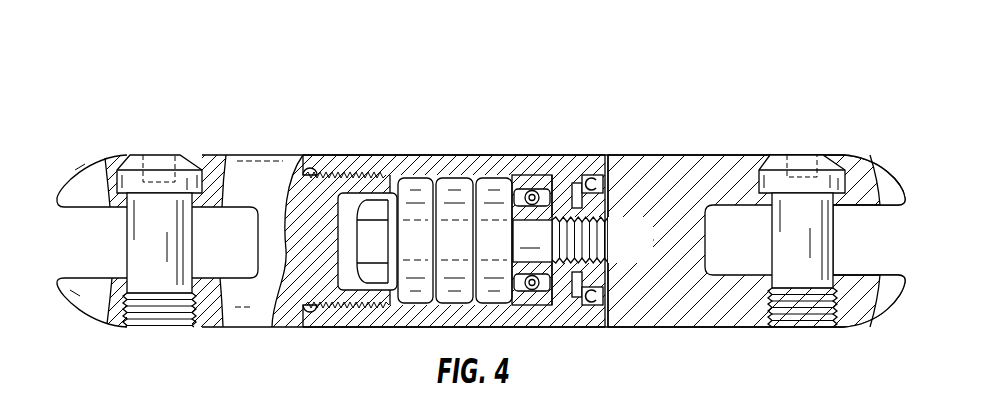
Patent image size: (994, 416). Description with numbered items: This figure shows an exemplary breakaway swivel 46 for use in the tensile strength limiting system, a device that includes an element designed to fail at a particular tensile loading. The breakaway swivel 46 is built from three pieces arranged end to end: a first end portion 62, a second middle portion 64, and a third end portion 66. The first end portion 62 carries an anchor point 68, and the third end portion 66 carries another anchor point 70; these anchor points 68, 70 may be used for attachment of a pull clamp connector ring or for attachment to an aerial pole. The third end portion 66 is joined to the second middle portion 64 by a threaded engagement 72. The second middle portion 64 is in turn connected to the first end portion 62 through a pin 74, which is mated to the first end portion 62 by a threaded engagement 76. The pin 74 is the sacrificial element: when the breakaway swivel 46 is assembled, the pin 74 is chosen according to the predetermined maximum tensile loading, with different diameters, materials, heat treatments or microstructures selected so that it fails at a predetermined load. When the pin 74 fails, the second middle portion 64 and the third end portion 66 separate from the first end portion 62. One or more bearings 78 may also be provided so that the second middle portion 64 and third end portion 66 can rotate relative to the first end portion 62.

The breakaway swivel 46 is at (580, 137).
The first end portion 62 is at (722, 172).
The second middle portion 64 is at (452, 165).
The third end portion 66 is at (250, 175).
The anchor point 68 is at (800, 280).
The anchor point 70 is at (157, 267).
The threaded engagement 72 is at (327, 312).
The pin 74 is at (372, 233).
The threaded engagement 76 is at (612, 208).
The bearings 78 is at (483, 230).